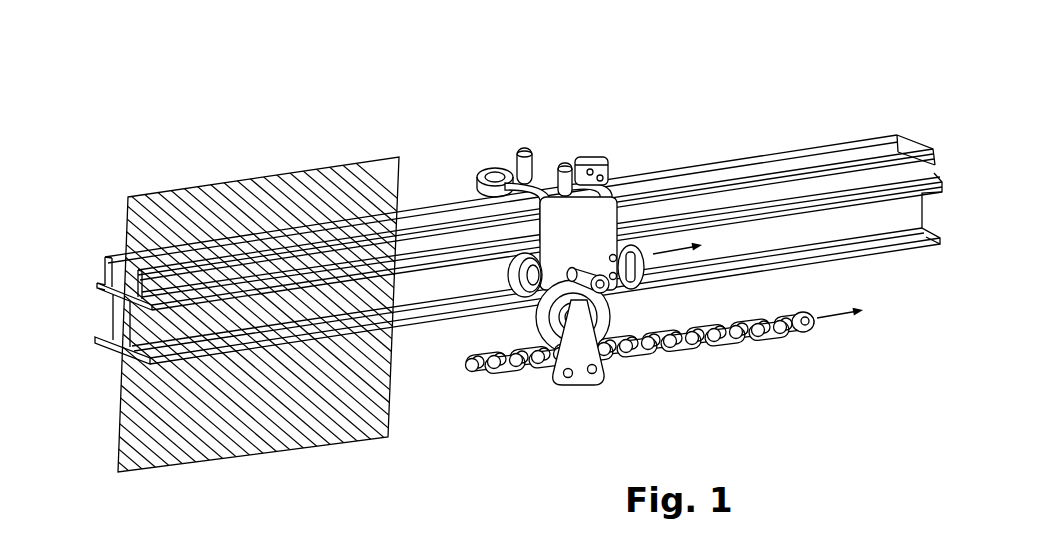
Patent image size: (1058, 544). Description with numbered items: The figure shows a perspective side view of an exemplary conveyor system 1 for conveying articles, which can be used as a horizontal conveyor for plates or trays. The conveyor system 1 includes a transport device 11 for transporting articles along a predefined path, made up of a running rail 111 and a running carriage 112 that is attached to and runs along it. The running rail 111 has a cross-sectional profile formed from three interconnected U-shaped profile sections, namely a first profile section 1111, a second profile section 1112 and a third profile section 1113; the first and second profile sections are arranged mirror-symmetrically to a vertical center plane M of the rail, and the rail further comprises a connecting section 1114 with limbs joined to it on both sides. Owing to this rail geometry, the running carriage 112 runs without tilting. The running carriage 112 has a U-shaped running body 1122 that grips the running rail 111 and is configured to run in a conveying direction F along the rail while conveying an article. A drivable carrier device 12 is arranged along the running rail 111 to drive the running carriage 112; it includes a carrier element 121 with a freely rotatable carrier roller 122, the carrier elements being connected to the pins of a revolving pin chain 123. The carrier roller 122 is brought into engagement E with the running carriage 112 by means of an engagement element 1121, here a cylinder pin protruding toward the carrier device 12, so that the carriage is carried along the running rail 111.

The conveyor system 1 is at (283, 120).
The transport device 11 is at (395, 102).
The running rail 111 is at (681, 203).
The first profile section 1111 is at (100, 308).
The second profile section 1112 is at (800, 231).
The third profile section 1113 is at (820, 156).
The connecting section 1114 is at (115, 348).
The drivable carrier device 12 is at (458, 412).
The running carriage 112 is at (500, 160).
The engagement element 1121 is at (628, 190).
The U-shaped running body 1122 is at (567, 160).
The carrier element 121 is at (584, 405).
The carrier roller 122 is at (538, 318).
The revolving pin chain 123 is at (700, 380).
The engagement E is at (611, 296).
The conveying direction F is at (674, 250).
The vertical center plane M is at (289, 420).